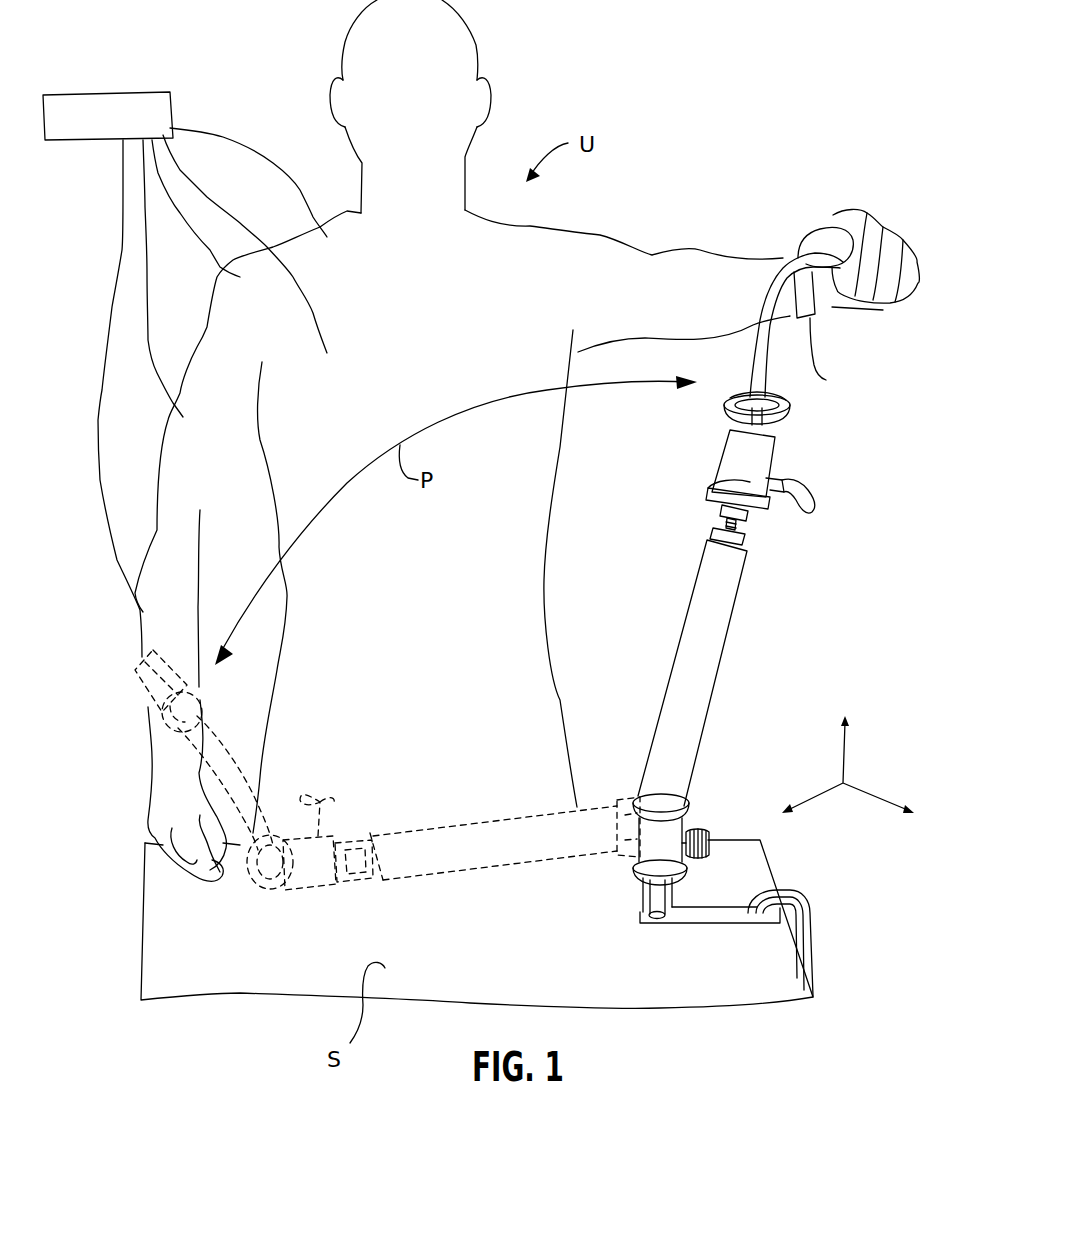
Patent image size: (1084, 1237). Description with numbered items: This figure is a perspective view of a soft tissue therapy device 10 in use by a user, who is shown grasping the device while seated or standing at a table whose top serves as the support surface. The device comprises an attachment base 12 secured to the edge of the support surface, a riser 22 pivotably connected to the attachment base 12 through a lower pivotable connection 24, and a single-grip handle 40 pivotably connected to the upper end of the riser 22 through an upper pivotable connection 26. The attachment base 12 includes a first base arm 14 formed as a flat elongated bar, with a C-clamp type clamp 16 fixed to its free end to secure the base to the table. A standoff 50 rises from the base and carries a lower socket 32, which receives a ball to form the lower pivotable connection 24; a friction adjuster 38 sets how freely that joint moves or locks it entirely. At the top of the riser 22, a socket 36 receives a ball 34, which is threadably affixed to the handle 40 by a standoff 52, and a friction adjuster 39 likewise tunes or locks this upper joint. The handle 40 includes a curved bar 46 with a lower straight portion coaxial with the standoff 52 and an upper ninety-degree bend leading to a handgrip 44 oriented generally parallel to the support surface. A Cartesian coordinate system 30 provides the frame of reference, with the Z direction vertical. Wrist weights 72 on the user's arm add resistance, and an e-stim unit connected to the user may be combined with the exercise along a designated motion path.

The soft tissue therapy device 10 is at (97, 92).
The attachment base 12 is at (715, 935).
The first base arm 14 is at (703, 917).
The clamp 16 is at (800, 903).
The riser 22 is at (687, 645).
The lower pivotable connection 24 is at (715, 802).
The upper pivotable connection 26 is at (736, 487).
The Cartesian coordinate system 30 is at (887, 757).
The lower socket 32 is at (647, 857).
The ball 34 is at (727, 414).
The socket 36 is at (730, 460).
The friction adjuster 38 is at (702, 856).
The friction adjuster 39 is at (797, 487).
The single-grip handle 40 is at (777, 232).
The handgrip 44 is at (835, 308).
The curved bar 46 is at (767, 298).
The standoff 50 is at (646, 905).
The standoff 52 is at (790, 414).
The wrist weights 72 is at (839, 354).